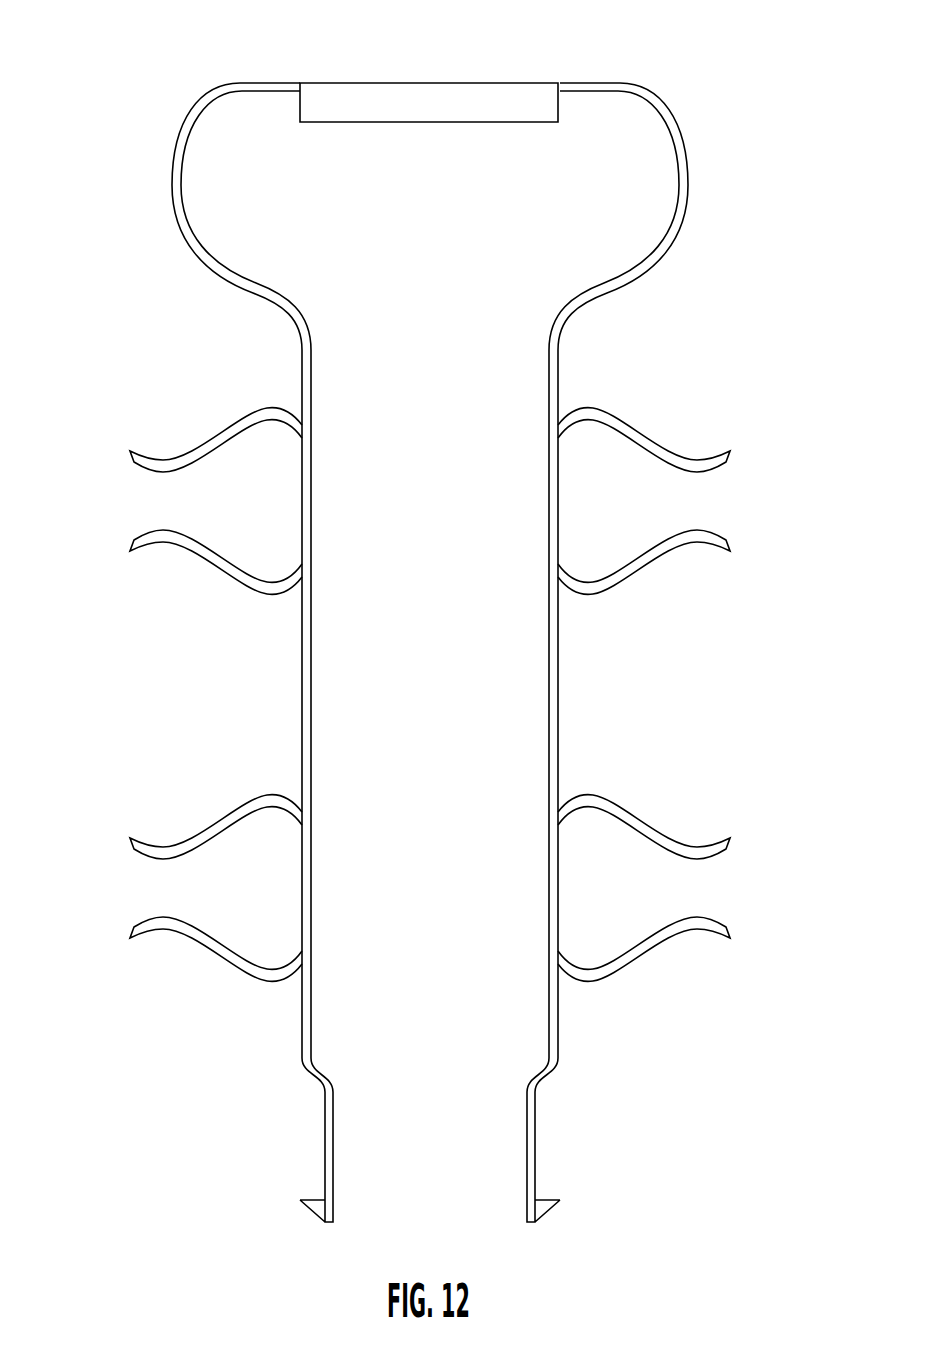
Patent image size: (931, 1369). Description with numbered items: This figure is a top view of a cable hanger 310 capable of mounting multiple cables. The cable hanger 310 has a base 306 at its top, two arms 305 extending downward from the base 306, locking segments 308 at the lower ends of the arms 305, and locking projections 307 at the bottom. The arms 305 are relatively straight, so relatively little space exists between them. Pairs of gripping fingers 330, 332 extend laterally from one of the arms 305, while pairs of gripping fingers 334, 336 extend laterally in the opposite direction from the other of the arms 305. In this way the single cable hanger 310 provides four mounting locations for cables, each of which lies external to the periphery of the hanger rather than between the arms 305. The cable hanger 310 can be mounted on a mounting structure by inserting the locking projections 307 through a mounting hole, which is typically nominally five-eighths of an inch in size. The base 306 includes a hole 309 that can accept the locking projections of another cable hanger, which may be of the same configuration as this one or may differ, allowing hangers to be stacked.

The arm 305 is at (302, 364).
The base 306 is at (620, 82).
The locking projection 307 is at (320, 1215).
The locking segment 308 is at (307, 1062).
The hole 309 is at (493, 103).
The cable hanger 310 is at (757, 414).
The pair of gripping fingers 330 is at (141, 510).
The pair of gripping fingers 332 is at (145, 893).
The pair of gripping fingers 334 is at (694, 475).
The pair of gripping fingers 336 is at (724, 896).